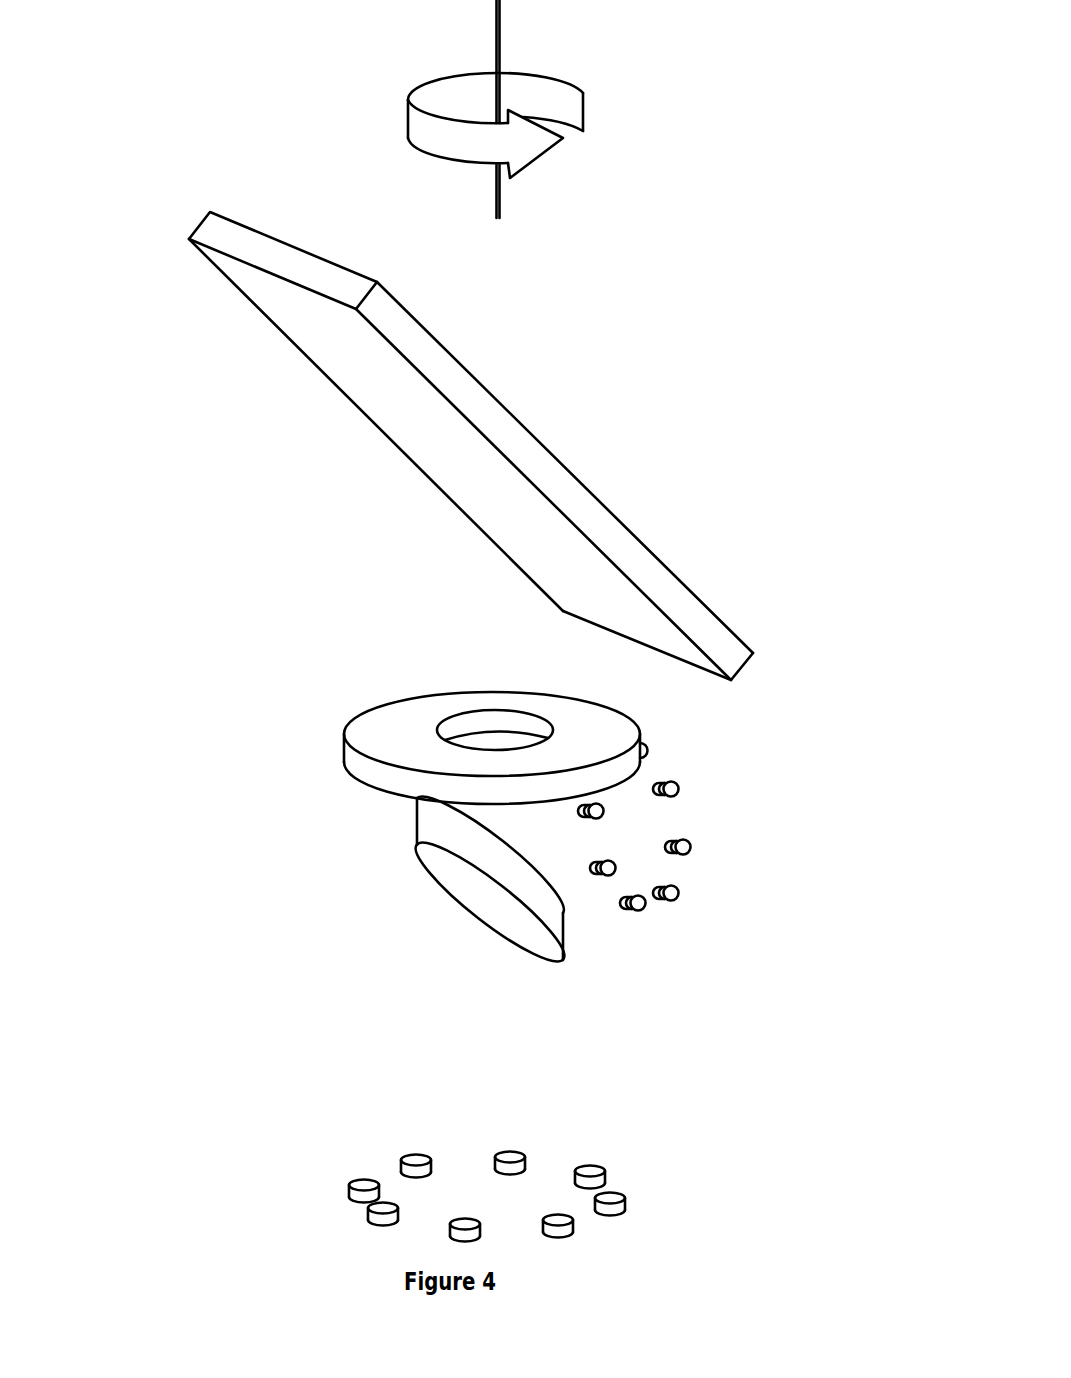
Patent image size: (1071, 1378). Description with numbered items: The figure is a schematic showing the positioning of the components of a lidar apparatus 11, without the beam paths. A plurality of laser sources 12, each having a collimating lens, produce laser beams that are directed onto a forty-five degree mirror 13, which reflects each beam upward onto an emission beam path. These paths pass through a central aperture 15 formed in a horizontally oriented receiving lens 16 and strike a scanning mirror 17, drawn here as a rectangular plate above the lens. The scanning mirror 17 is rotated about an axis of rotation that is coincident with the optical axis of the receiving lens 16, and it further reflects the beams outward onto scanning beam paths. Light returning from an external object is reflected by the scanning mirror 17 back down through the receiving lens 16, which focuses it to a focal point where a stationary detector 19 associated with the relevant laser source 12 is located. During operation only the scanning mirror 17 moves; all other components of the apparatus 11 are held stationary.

The lidar apparatus 11 is at (390, 582).
The laser sources 12 is at (692, 846).
The 45° mirror 13 is at (475, 895).
The central aperture 15 is at (487, 743).
The receiving lens 16 is at (344, 765).
The scanning mirror 17 is at (510, 428).
The stationary detector 19 is at (525, 1155).